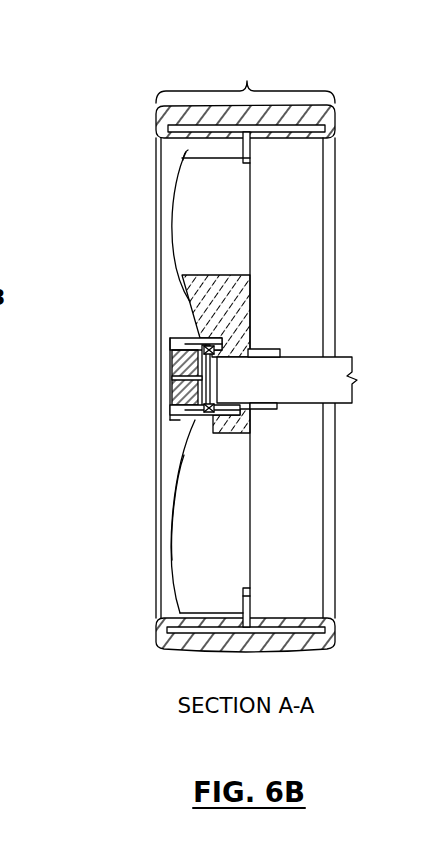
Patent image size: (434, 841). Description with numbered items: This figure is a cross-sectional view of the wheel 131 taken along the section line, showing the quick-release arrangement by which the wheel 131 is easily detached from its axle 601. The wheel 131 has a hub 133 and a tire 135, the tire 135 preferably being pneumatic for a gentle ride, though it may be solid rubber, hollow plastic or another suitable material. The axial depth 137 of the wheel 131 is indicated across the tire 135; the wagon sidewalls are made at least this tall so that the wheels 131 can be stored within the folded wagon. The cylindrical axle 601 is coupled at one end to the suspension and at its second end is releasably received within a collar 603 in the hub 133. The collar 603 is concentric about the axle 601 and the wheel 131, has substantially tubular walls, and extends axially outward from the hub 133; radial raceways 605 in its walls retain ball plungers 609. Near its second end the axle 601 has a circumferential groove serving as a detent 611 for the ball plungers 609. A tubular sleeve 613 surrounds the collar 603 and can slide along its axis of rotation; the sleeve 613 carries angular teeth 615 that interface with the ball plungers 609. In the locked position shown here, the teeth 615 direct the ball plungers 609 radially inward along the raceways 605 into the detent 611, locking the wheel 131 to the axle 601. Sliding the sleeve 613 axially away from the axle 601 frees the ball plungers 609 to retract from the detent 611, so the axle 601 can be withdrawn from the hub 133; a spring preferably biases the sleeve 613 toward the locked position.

The wheel 131 is at (362, 90).
The hub 133 is at (223, 290).
The tire 135 is at (325, 130).
The depth 137 is at (245, 77).
The axle 601 is at (345, 357).
The collar 603 is at (280, 352).
The raceways 605 is at (198, 420).
The ball plungers 609 is at (222, 431).
The detent 611 is at (208, 379).
The tubular sleeve 613 is at (170, 339).
The angular teeth 615 is at (212, 340).